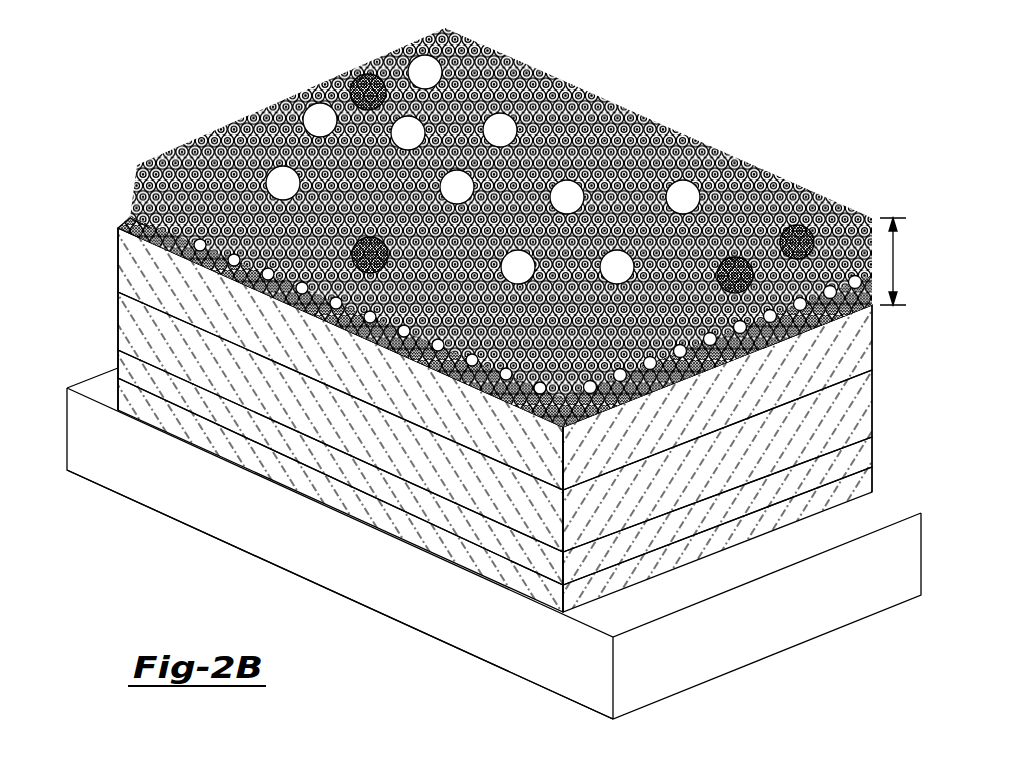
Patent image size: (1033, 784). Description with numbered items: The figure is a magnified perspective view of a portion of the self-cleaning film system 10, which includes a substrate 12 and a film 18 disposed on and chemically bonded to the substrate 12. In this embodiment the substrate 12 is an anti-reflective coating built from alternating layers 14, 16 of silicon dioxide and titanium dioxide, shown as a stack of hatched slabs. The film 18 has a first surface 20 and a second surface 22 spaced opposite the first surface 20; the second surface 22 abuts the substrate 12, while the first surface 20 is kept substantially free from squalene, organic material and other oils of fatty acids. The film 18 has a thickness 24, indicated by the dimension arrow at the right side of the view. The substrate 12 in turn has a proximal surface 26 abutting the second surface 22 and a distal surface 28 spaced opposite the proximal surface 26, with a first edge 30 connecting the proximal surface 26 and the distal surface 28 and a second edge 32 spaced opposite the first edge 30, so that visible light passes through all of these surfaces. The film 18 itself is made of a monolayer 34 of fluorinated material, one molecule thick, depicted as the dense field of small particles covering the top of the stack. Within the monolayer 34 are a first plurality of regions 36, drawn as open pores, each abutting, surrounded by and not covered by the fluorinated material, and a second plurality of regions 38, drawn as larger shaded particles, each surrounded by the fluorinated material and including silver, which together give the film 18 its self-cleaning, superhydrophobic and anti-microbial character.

The self-cleaning film system 10 is at (463, 365).
The substrate 12 is at (52, 229).
The layer 14 is at (865, 345).
The layer 16 is at (864, 406).
The film 18 is at (207, 240).
The first surface 20 is at (133, 228).
The second surface 22 is at (130, 240).
The thickness 24 is at (901, 261).
The proximal surface 26 is at (476, 219).
The distal surface 28 is at (358, 604).
The first edge 30 is at (117, 342).
The second edge 32 is at (563, 527).
The monolayer 34 is at (612, 120).
The first plurality of regions 36 is at (425, 72).
The second plurality of regions 38 is at (800, 242).